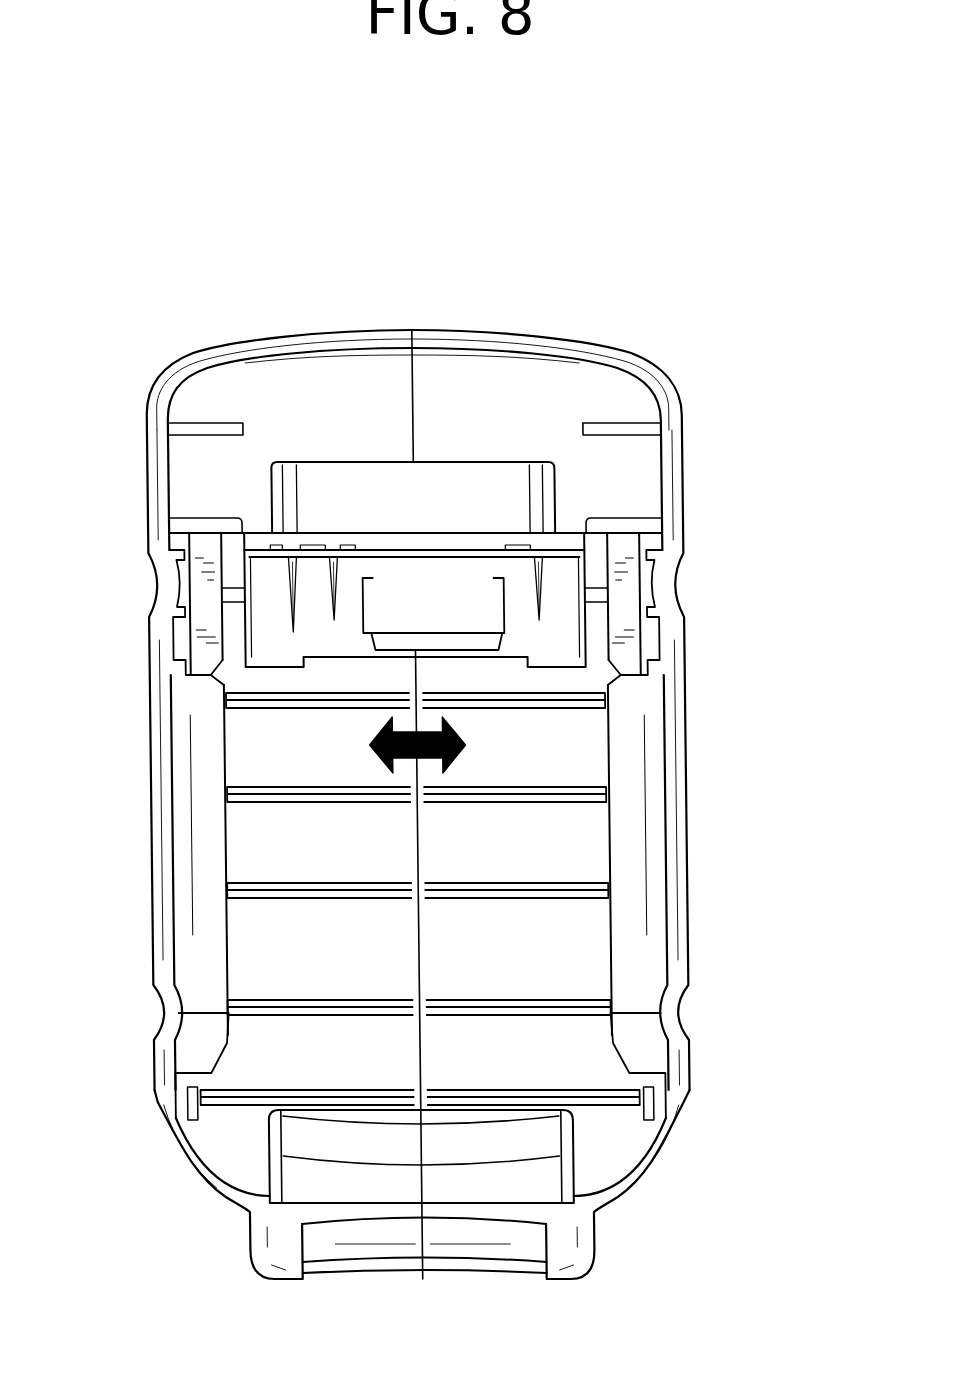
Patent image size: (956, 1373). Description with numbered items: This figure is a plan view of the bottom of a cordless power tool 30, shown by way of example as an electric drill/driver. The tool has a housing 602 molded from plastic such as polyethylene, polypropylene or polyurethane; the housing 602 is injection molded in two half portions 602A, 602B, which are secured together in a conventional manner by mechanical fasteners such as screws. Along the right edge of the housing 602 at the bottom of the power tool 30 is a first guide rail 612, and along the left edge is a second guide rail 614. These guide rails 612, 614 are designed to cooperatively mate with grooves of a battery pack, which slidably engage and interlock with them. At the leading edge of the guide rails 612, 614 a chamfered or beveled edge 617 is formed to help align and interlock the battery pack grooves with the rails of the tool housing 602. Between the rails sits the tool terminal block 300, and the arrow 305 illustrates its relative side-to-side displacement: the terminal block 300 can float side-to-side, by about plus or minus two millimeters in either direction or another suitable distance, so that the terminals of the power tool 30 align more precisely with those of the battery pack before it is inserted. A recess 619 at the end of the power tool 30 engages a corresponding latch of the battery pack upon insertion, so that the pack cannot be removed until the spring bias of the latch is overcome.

The cordless power tool 30 is at (534, 312).
The tool terminal block 300 is at (458, 588).
The arrow 305 is at (452, 765).
The housing 602 is at (307, 331).
The first housing half portion 602A is at (162, 384).
The second housing half portion 602B is at (658, 372).
The first guide rail 612 is at (655, 808).
The second guide rail 614 is at (180, 851).
The chamfered or beveled edge 617 is at (228, 1040).
The recess 619 is at (315, 1138).